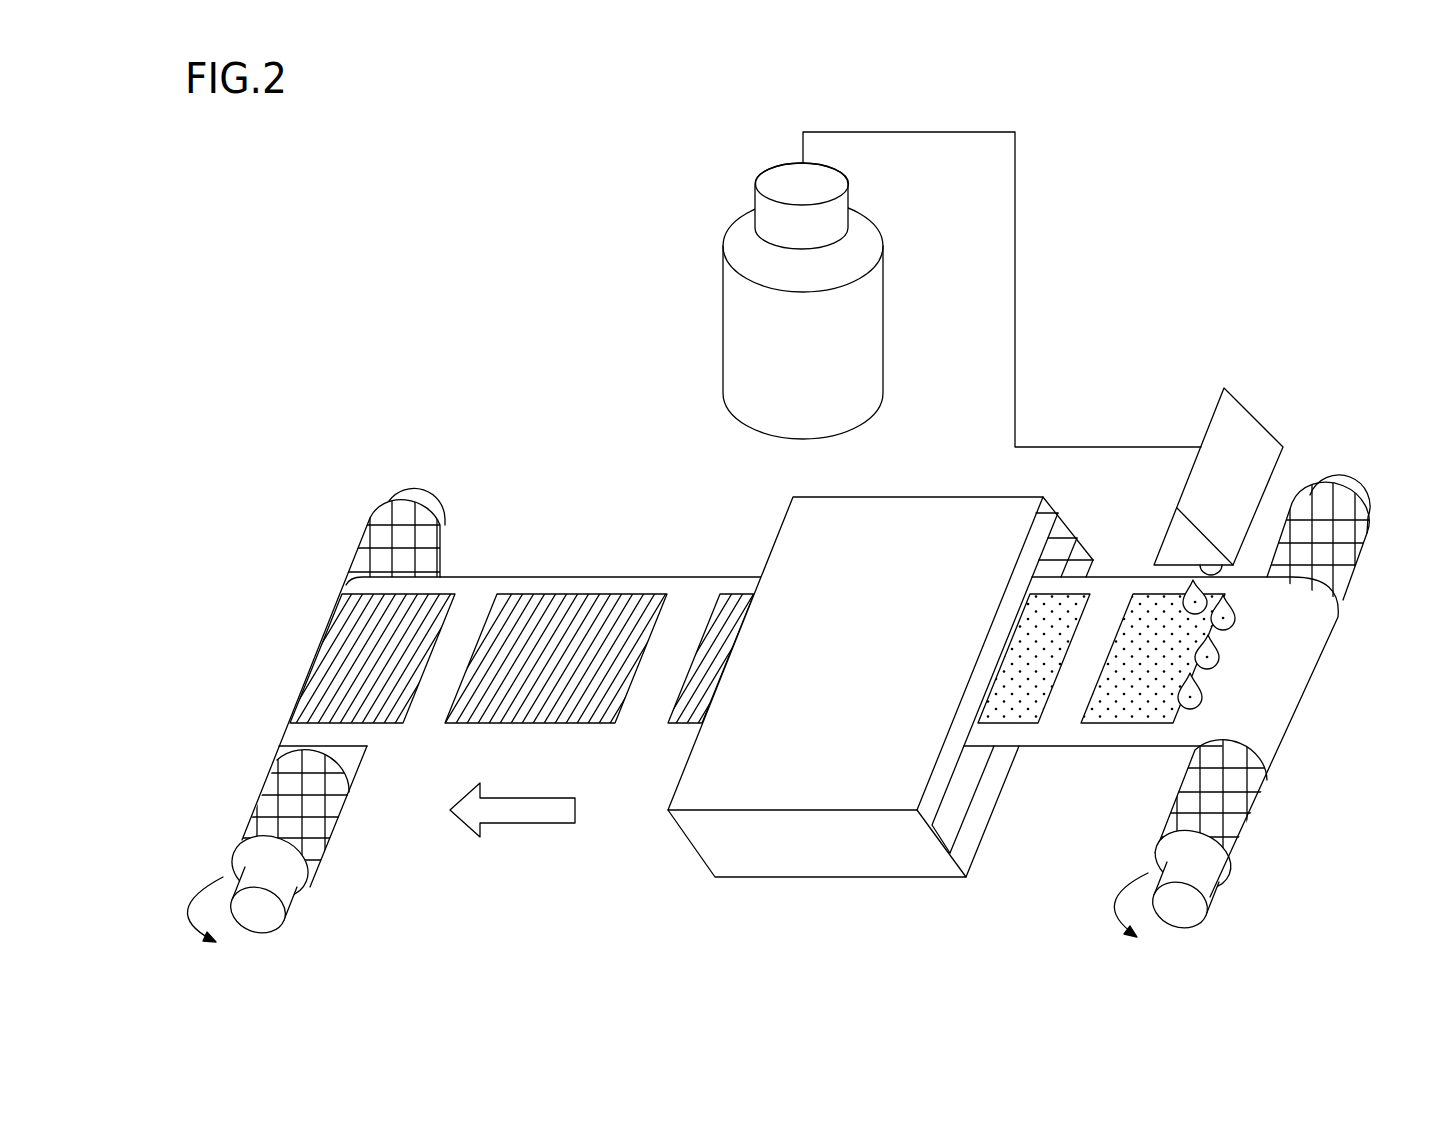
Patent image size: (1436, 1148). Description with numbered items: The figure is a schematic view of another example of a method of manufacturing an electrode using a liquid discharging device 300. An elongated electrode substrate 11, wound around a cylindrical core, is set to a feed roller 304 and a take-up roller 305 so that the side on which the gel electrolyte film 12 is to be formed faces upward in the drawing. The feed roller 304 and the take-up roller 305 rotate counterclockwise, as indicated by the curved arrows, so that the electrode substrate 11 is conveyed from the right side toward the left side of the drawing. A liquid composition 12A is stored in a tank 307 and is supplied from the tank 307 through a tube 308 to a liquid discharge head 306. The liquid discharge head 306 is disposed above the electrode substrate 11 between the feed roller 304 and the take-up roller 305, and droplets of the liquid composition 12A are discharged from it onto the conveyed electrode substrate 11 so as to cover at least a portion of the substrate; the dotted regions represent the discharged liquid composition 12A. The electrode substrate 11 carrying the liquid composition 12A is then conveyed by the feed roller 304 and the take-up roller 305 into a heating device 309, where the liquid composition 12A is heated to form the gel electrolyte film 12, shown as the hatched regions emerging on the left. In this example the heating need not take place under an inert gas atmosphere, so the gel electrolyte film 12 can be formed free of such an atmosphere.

The liquid discharging device 300 is at (1100, 121).
The electrode substrate 11 is at (470, 620).
The gel electrolyte film 12 is at (562, 620).
The liquid composition 12A is at (1117, 703).
The feed roller 304 is at (1264, 883).
The take-up roller 305 is at (342, 888).
The liquid discharge head 306 is at (1245, 437).
The tank 307 is at (749, 335).
The tube 308 is at (1015, 210).
The heating device 309 is at (920, 496).